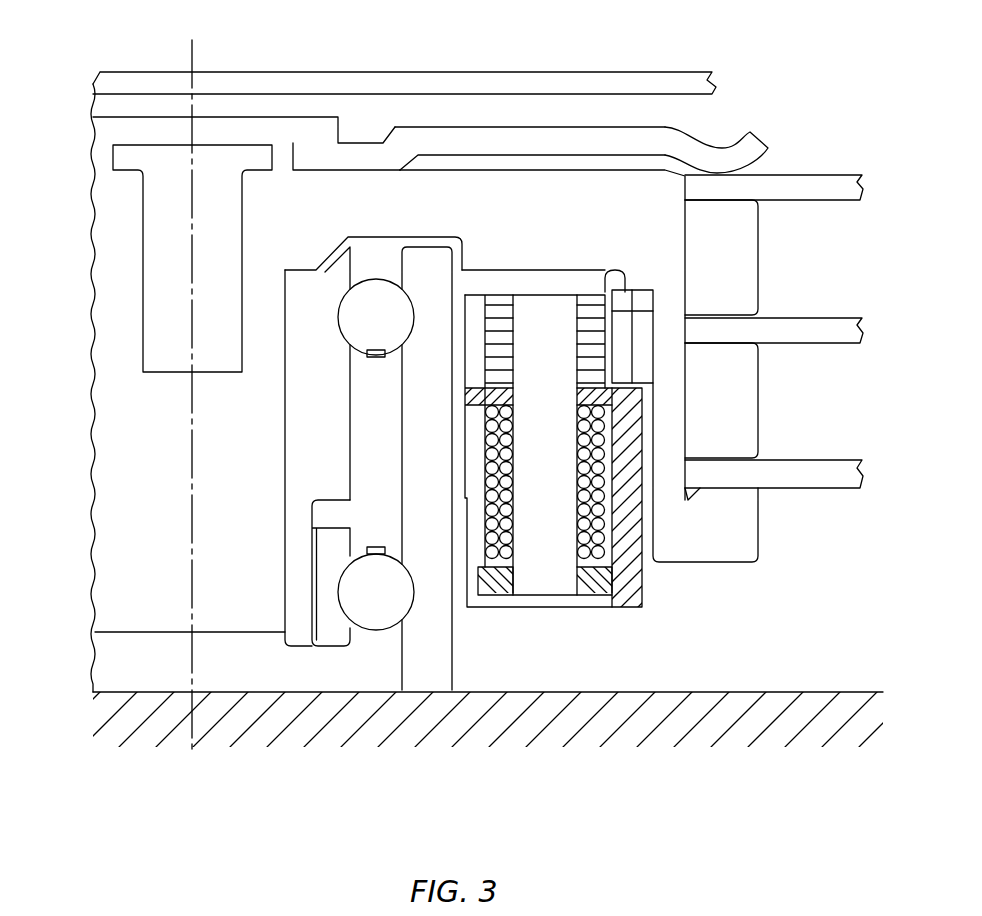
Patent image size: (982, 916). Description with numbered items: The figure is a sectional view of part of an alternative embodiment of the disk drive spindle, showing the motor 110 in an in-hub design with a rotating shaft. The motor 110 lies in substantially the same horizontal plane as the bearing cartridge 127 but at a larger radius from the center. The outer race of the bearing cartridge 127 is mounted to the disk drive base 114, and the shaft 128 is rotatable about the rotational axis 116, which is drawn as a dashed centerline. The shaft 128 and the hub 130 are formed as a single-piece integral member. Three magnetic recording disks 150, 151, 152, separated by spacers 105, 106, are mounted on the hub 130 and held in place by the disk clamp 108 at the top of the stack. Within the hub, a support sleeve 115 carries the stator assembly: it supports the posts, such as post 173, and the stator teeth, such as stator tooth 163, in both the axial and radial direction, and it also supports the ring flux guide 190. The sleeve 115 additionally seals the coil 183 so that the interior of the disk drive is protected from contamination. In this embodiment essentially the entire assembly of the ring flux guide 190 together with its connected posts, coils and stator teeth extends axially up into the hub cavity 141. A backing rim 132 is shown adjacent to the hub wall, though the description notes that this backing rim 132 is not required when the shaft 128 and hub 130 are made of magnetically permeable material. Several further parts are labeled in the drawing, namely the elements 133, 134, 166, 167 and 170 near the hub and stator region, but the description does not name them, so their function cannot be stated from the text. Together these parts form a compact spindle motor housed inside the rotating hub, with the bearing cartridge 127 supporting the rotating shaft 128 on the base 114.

The spacer 105 is at (743, 438).
The spacer 106 is at (745, 228).
The disk clamp 108 is at (717, 157).
The motor 110 is at (493, 140).
The disk drive base 114 is at (822, 690).
The support sleeve 115 is at (643, 590).
The rotational axis 116 is at (192, 526).
The bearing cartridge 127 is at (337, 282).
The shaft 128 is at (123, 430).
The hub 130 is at (625, 187).
The backing rim 132 is at (648, 352).
The body portion 133 is at (677, 410).
The sensor element 134 is at (627, 368).
The hub cavity 141 is at (541, 284).
The magnetic recording disk 150 is at (818, 480).
The magnetic recording disk 151 is at (830, 336).
The magnetic recording disk 152 is at (826, 182).
The stator tooth 163 is at (502, 300).
The right lamination stack 166 is at (600, 304).
The divider 167 is at (653, 311).
The boss 170 is at (605, 280).
The post 173 is at (545, 568).
The coil 183 is at (497, 560).
The ring flux guide 190 is at (598, 592).